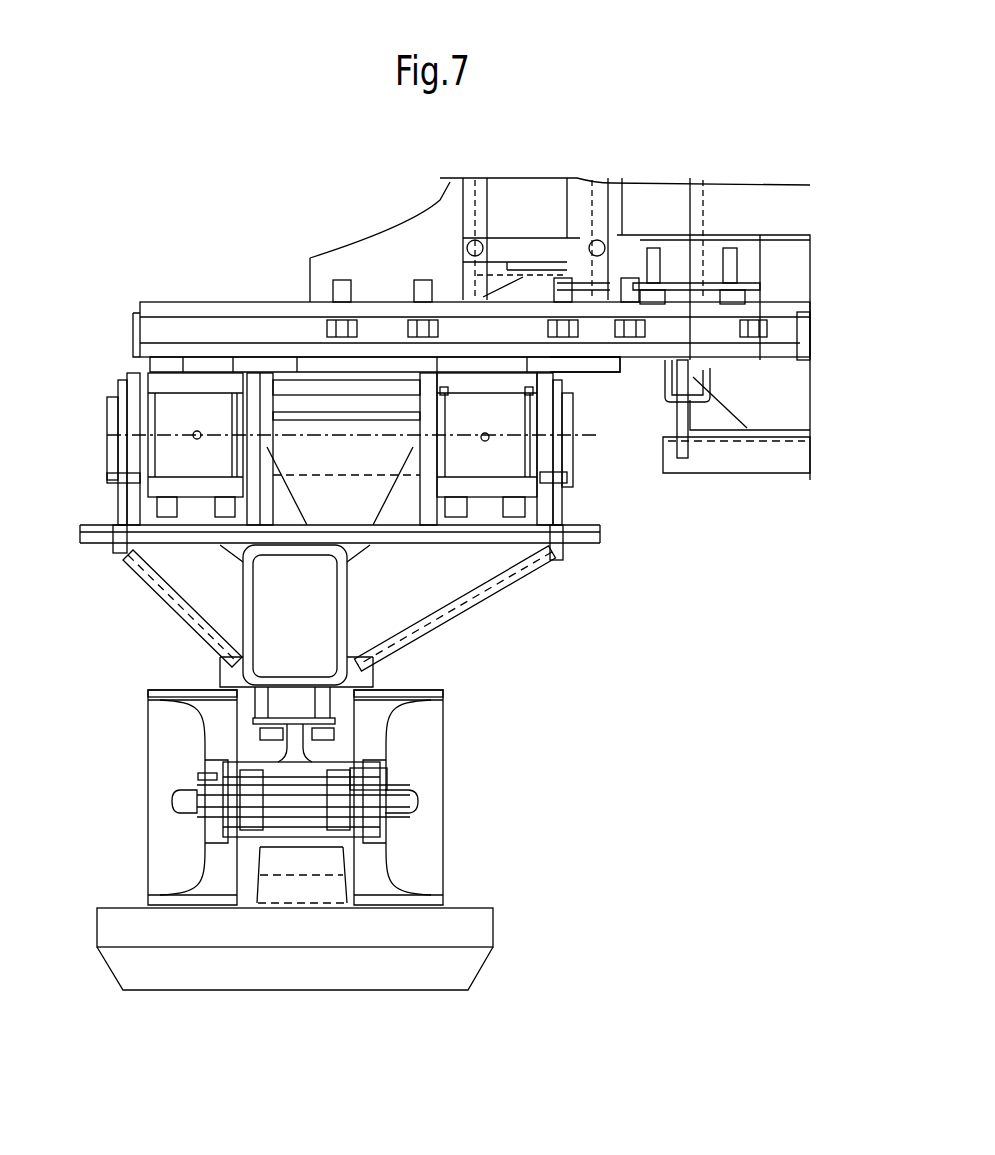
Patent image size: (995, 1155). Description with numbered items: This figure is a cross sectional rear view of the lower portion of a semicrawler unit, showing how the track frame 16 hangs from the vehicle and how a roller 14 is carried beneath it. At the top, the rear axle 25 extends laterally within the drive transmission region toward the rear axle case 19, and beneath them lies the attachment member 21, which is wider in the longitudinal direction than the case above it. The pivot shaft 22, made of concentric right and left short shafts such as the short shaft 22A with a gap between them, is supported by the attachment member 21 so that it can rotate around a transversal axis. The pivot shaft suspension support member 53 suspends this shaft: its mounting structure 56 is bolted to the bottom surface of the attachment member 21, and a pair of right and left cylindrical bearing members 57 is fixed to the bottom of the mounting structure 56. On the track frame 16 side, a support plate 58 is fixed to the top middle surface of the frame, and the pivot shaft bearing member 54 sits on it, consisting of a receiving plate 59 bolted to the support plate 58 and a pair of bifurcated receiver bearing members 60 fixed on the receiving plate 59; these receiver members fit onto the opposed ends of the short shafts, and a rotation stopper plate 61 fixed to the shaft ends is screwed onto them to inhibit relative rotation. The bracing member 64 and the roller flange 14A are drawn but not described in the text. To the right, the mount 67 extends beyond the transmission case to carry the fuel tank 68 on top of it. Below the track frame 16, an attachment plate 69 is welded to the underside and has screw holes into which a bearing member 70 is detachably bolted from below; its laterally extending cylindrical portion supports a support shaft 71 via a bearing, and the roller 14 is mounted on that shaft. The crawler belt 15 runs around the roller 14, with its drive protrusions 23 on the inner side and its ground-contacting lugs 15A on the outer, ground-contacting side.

The rear axle 25 is at (530, 212).
The rear axle case 19 is at (770, 267).
The attachment member 21 is at (280, 308).
The short shaft 22A is at (203, 403).
The pivot shaft 22 is at (510, 418).
The pivot shaft suspension support member 53 is at (115, 368).
The pivot shaft bearing member 54 is at (90, 468).
The rotation stopper plate 61 is at (108, 475).
The mounting structure 56 is at (583, 373).
The cylindrical bearing member 57 is at (507, 385).
The bifurcated receiver bearing member 60 is at (545, 503).
The receiving plate 59 is at (597, 533).
The support plate 58 is at (587, 547).
The mount 67 is at (732, 460).
The fuel tank 68 is at (787, 402).
The diagonal brace 64 is at (515, 577).
The track frame 16 is at (340, 590).
The attachment plate 69 is at (292, 690).
The bearing member 70 is at (280, 772).
The support shaft 71 is at (170, 800).
The drive protrusion 23 is at (333, 870).
The roller 14 is at (462, 691).
The wheel flange 14A is at (407, 692).
The crawler belt 15 is at (472, 928).
The ground-contacting lug 15A is at (462, 968).